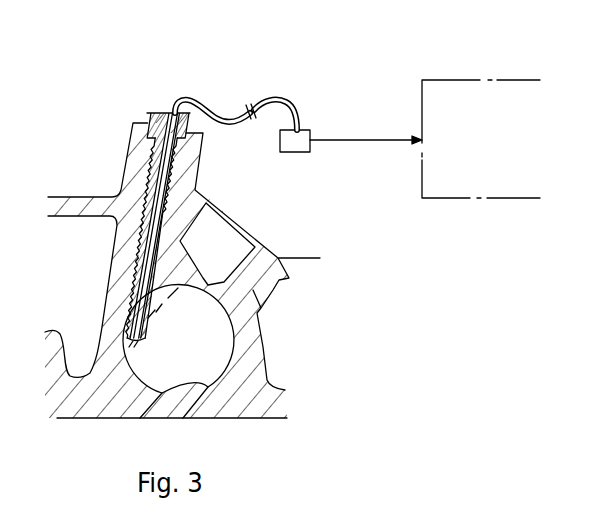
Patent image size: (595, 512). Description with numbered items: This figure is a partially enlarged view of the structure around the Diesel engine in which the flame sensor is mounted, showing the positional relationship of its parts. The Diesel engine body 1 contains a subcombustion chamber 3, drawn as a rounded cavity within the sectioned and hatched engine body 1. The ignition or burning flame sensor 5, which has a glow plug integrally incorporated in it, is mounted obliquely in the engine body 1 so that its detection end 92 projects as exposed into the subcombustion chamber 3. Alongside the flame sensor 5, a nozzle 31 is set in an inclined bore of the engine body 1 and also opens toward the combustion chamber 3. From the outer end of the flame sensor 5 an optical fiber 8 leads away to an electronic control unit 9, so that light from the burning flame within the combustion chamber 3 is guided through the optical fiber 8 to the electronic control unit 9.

The Diesel engine body 1 is at (333, 269).
The subcombustion chamber 3 is at (218, 353).
The flame sensor 5 is at (145, 232).
The optical fiber 8 is at (202, 108).
The electronic control unit 9 is at (455, 87).
The nozzle 31 is at (237, 240).
The detection end 92 is at (125, 350).